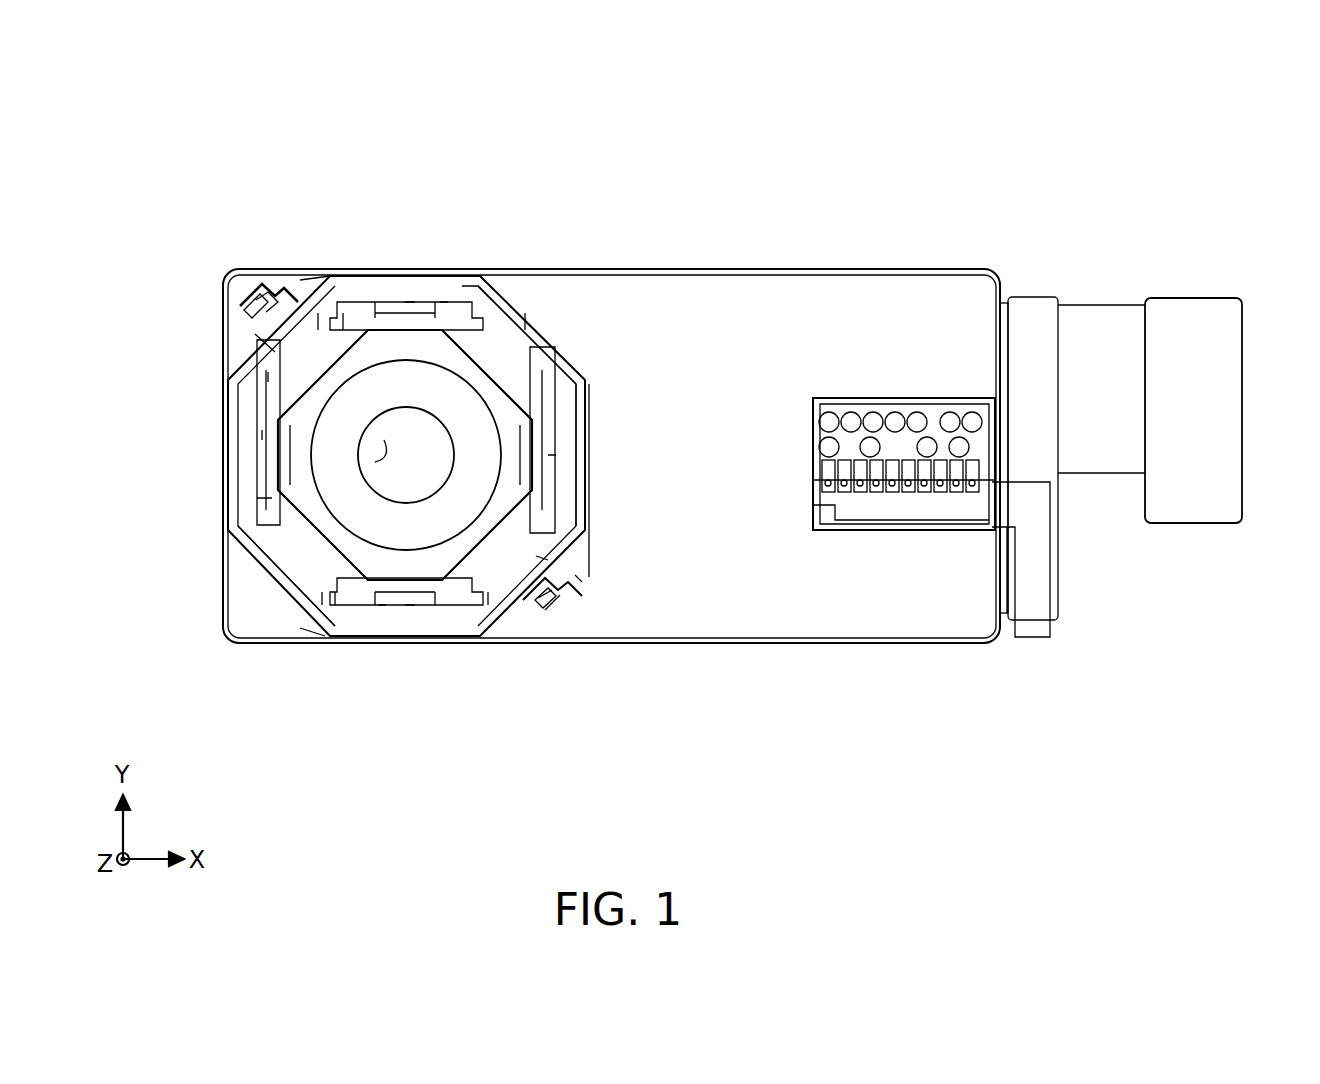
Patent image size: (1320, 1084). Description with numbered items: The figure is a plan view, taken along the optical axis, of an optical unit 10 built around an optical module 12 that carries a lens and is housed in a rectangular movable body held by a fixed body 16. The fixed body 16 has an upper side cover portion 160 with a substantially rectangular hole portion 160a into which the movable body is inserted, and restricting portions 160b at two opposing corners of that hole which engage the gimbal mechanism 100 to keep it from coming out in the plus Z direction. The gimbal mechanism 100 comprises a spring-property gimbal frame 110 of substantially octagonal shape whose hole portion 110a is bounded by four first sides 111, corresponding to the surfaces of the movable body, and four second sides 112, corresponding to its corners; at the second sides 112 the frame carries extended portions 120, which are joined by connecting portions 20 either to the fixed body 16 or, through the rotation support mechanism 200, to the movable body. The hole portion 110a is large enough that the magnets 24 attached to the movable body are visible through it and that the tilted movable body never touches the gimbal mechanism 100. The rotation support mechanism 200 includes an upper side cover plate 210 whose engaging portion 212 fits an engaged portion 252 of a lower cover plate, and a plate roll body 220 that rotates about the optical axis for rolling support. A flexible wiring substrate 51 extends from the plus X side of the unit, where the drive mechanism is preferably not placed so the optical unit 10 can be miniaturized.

The optical unit 10 is at (1172, 176).
The optical module 12 is at (384, 457).
The fixed body 16 is at (905, 272).
The connecting portion 20 is at (613, 720).
The magnet 24 is at (268, 345).
The flexible wiring substrate 51 is at (1090, 330).
The gimbal mechanism 100 is at (577, 425).
The gimbal frame 110 is at (225, 282).
The hole portion 110a is at (472, 305).
The first side 111 is at (343, 302).
The second side 112 is at (312, 306).
The extended portion 120 is at (553, 763).
The upper side cover portion 160 is at (822, 302).
The hole portion 160a is at (572, 330).
The restricting portion 160b is at (555, 325).
The rotation support mechanism 200 is at (313, 542).
The upper side cover plate 210 is at (302, 490).
The engaging portion 212 is at (408, 306).
The plate roll body 220 is at (295, 524).
The engaged portion 252 is at (442, 300).